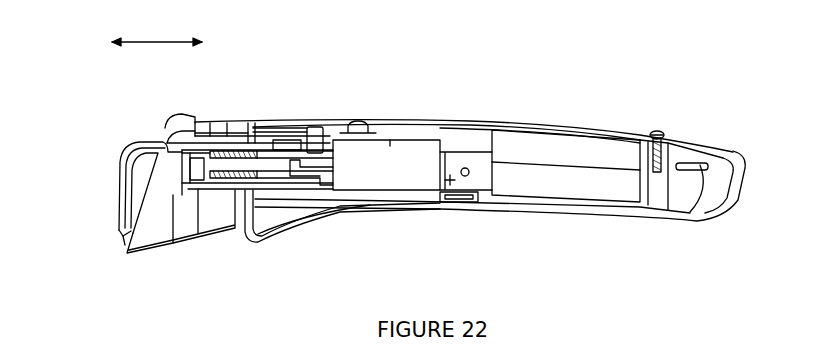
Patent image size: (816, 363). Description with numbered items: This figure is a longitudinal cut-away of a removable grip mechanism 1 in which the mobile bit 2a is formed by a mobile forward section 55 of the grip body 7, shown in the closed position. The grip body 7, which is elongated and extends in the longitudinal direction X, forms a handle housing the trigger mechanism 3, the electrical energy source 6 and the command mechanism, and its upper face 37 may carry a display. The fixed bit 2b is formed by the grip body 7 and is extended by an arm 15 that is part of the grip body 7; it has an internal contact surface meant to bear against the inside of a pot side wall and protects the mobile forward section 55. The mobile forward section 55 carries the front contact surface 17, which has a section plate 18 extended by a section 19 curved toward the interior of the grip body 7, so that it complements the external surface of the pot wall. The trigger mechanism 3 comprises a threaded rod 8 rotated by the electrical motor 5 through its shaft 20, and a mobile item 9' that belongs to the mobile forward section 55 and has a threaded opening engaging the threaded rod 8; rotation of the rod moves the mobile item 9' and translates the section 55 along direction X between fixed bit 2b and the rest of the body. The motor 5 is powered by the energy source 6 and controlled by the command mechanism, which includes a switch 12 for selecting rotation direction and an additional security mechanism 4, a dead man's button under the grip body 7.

The longitudinal direction X is at (140, 42).
The removable grip mechanism 1 is at (470, 86).
The mobile bit 2a is at (132, 250).
The fixed bit 2b is at (121, 185).
The trigger mechanism 3 is at (268, 117).
The additional security mechanism 4 is at (370, 212).
The electrical motor 5 is at (422, 193).
The electrical energy source 6 is at (613, 200).
The grip body 7 is at (690, 224).
The threaded rod 8 is at (229, 160).
The mobile item 9' is at (266, 202).
The switch 12 is at (313, 119).
The arm 15 is at (203, 143).
The front contact surface 17 is at (120, 245).
The section plate 18 is at (118, 230).
The curved section 19 is at (158, 148).
The shaft 20 is at (307, 167).
The upper face 37 is at (548, 120).
The mobile forward section 55 is at (184, 243).